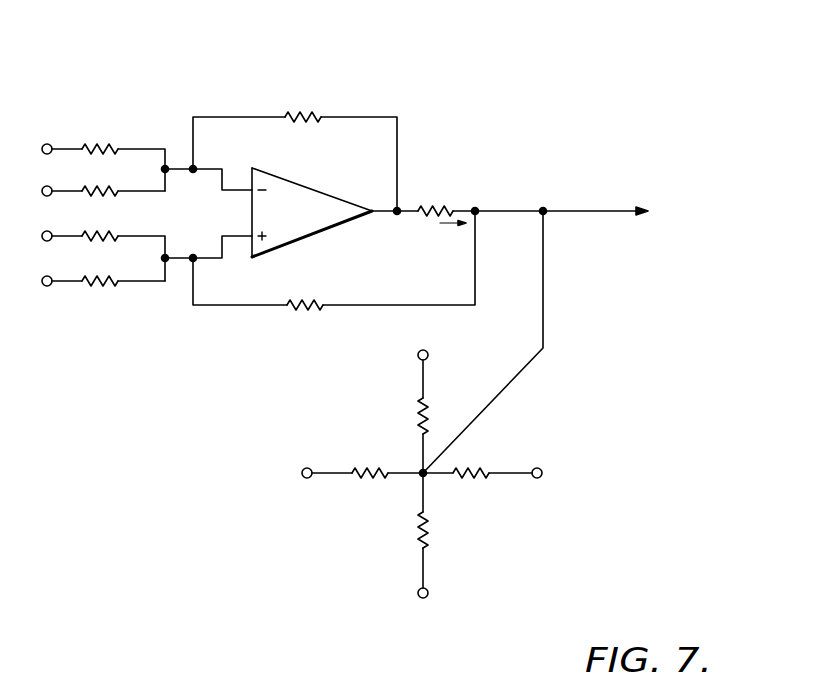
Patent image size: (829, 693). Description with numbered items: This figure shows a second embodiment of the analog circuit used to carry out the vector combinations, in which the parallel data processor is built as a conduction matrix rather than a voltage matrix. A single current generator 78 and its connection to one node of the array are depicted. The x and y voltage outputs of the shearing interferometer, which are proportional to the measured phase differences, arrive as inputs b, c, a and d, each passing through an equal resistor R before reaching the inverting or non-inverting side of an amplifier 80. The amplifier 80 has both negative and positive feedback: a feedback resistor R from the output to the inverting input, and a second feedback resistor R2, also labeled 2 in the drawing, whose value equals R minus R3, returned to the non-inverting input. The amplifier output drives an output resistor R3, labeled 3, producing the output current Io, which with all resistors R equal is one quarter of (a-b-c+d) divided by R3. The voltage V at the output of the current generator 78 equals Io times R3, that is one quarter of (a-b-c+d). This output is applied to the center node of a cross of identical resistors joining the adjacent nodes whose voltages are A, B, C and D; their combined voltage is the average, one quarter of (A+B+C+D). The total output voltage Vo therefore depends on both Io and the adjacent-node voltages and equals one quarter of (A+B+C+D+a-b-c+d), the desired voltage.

The current generator 78 is at (425, 158).
The amplifier 80 is at (303, 186).
The feedback resistor R2 (= R − R3) 2 is at (334, 260).
The output resistor R3 3 is at (435, 201).
The resistor R is at (295, 152).
The feedback resistor R2 is at (334, 260).
The resistor R3 is at (435, 201).
The voltage at the output of the current generator V is at (475, 201).
The output voltage Vo is at (562, 213).
The output current Io is at (447, 233).
The adjacent node voltage A is at (353, 474).
The adjacent node voltage B is at (423, 401).
The adjacent node voltage C is at (490, 474).
The adjacent node voltage D is at (423, 547).
The input a is at (93, 246).
The input b is at (93, 158).
The input c is at (93, 183).
The input d is at (93, 273).